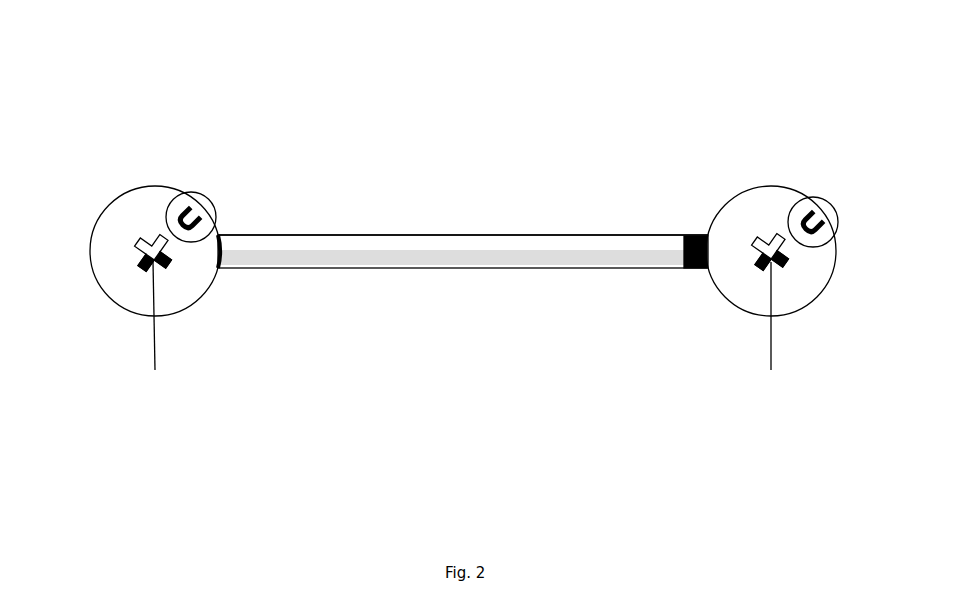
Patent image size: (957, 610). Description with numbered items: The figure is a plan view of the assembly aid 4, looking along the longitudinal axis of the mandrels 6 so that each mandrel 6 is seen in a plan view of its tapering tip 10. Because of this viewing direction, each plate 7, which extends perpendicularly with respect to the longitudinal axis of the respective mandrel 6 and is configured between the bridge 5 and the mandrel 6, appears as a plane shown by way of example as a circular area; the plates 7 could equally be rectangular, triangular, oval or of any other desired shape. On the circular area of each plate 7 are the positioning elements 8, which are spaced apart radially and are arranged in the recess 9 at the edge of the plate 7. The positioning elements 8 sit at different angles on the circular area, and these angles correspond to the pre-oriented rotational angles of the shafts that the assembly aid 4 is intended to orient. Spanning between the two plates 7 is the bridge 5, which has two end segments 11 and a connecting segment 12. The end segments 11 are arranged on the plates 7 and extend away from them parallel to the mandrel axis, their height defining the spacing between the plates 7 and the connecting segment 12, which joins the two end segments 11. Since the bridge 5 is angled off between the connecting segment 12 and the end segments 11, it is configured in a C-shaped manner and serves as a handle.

The assembly aid 4 is at (547, 140).
The bridge 5 is at (515, 258).
The mandrel 6 is at (166, 266).
The plate 7 is at (113, 254).
The positioning element 8 is at (199, 208).
The recess 9 is at (180, 201).
The tapering tip 10 is at (464, 330).
The end segment 11 is at (224, 265).
The connecting segment 12 is at (567, 250).